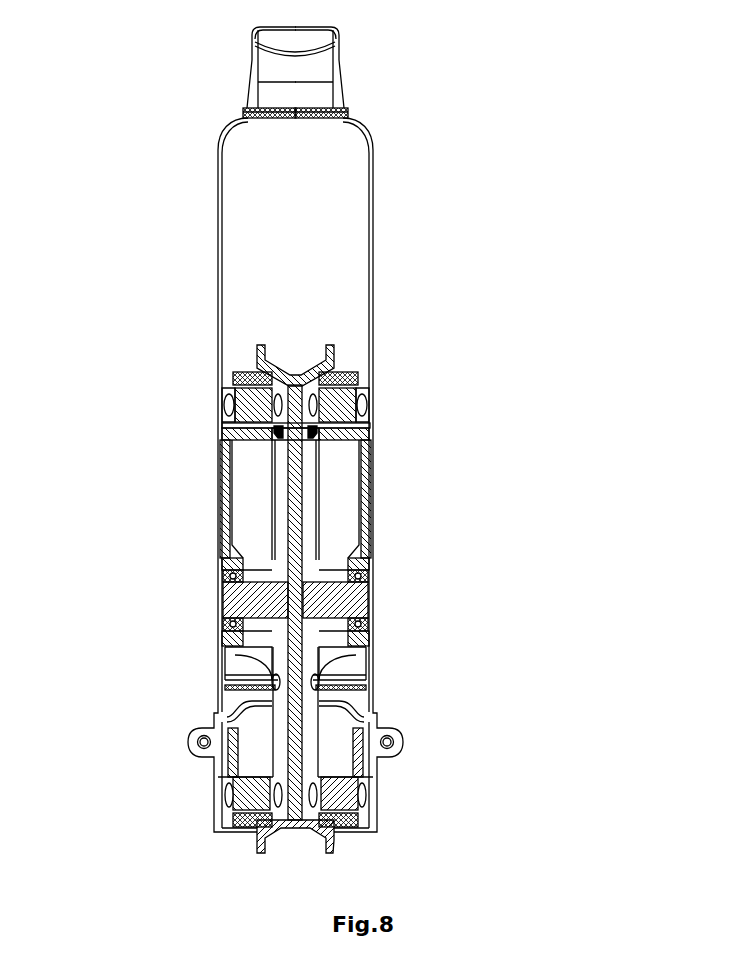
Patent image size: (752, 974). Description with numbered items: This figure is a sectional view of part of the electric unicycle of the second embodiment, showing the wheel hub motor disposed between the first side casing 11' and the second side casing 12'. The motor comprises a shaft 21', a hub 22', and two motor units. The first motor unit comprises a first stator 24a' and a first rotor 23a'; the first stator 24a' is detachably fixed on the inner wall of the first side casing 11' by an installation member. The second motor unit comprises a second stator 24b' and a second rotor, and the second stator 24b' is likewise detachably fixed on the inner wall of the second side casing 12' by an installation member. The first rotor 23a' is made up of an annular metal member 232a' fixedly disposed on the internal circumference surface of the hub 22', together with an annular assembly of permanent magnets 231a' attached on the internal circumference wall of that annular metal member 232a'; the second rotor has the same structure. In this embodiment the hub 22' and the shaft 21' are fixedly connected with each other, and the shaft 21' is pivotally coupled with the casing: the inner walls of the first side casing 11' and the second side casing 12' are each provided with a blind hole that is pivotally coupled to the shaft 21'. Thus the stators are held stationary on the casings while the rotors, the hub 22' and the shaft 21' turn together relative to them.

The first side casing 11' is at (360, 429).
The second side casing 12' is at (205, 475).
The first rotor 23a' is at (449, 336).
The annular assembly of permanent magnets 231a' is at (409, 336).
The annular metal member 232a' is at (397, 357).
The second stator 24b' is at (216, 422).
The first stator 24a' is at (387, 441).
The shaft 21' is at (379, 602).
The hub 22' is at (219, 619).